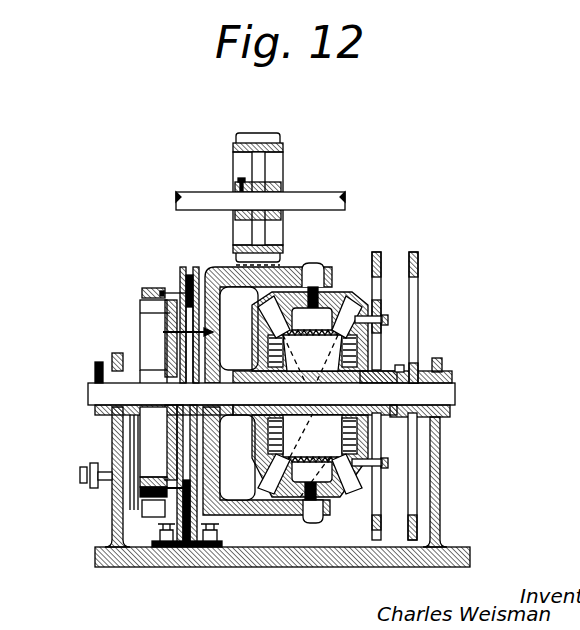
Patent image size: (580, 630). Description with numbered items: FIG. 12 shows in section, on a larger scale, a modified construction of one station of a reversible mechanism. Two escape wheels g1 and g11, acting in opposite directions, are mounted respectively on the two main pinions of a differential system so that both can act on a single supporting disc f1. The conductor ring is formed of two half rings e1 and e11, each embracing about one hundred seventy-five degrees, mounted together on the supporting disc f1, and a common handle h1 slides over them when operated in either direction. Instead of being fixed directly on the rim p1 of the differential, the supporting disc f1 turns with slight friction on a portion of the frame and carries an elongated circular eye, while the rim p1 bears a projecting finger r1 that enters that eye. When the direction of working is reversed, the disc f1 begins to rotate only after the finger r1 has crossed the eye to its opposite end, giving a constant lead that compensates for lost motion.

The rim p1 is at (290, 277).
The conductor half ring e11 is at (150, 288).
The supporting disc f1 is at (170, 313).
The finger r1 is at (163, 332).
The handle h1 is at (142, 503).
The conductor half ring e1 is at (142, 513).
The escape wheel g1 is at (381, 262).
The escape wheel g11 is at (418, 268).